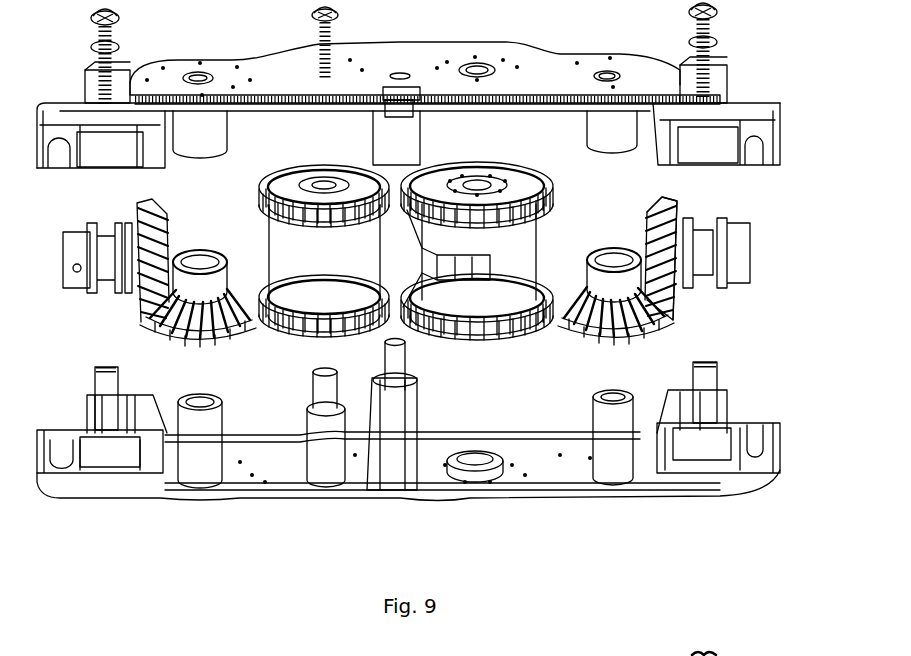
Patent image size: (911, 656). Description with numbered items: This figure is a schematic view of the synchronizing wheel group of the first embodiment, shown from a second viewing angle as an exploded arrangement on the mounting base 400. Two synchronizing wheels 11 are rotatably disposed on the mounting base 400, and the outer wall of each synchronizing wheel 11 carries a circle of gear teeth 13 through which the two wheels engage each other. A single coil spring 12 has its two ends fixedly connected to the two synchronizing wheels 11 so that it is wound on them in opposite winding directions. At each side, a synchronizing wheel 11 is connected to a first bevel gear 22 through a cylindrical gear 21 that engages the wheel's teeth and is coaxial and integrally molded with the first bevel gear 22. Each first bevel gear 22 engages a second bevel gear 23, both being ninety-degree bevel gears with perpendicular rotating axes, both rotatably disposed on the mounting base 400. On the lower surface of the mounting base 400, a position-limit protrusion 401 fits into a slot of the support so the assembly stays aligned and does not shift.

The mounting base 400 is at (543, 67).
The position-limit protrusion 401 is at (740, 123).
The synchronizing wheel 11 is at (540, 177).
The coil spring 12 is at (397, 268).
The gear teeth 13 is at (570, 203).
The cylindrical gear 21 is at (657, 335).
The first bevel gear 22 is at (677, 317).
The second bevel gear 23 is at (668, 283).